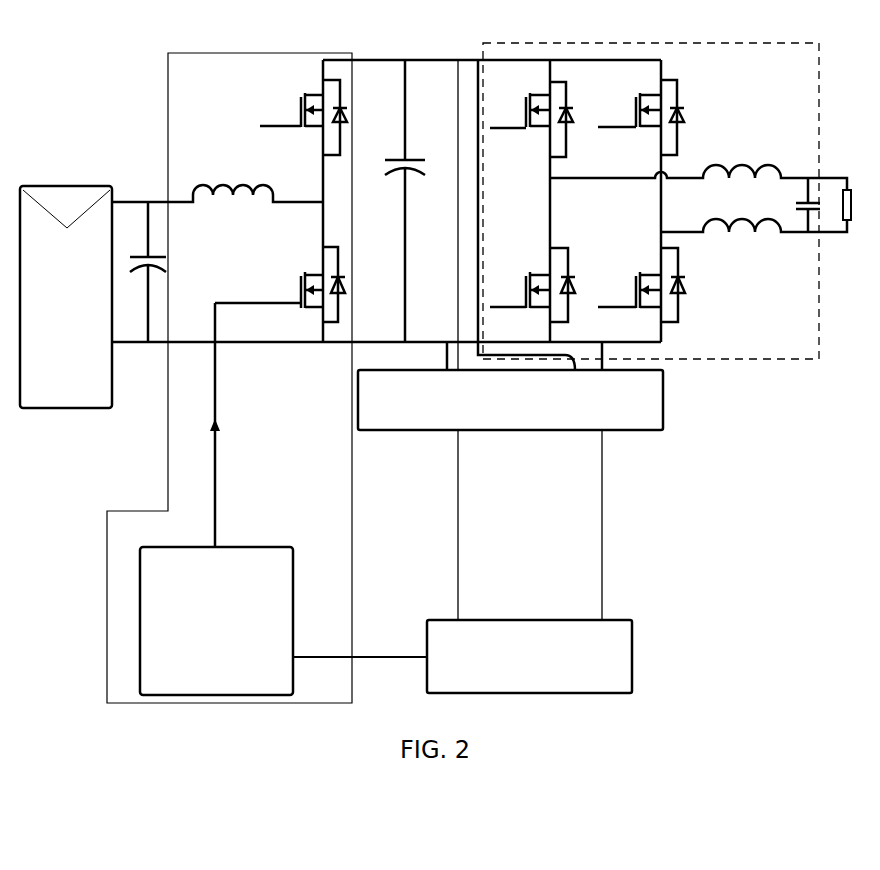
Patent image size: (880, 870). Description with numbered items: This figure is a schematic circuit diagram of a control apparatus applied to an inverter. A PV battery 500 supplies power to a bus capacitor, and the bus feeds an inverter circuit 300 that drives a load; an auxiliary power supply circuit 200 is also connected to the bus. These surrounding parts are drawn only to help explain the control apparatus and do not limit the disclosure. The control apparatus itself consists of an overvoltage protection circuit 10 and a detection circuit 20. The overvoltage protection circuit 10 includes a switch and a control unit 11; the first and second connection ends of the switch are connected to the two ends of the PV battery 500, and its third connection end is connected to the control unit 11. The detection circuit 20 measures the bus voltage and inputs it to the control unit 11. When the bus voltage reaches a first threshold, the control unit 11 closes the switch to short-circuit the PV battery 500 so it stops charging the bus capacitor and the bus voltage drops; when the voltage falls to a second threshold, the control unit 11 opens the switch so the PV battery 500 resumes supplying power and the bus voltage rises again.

The overvoltage protection circuit 10 is at (230, 53).
The control unit 11 is at (283, 621).
The detection circuit 20 is at (529, 656).
The auxiliary power supply circuit 200 is at (510, 400).
The inverter circuit 300 is at (675, 43).
The PV battery 500 is at (66, 297).